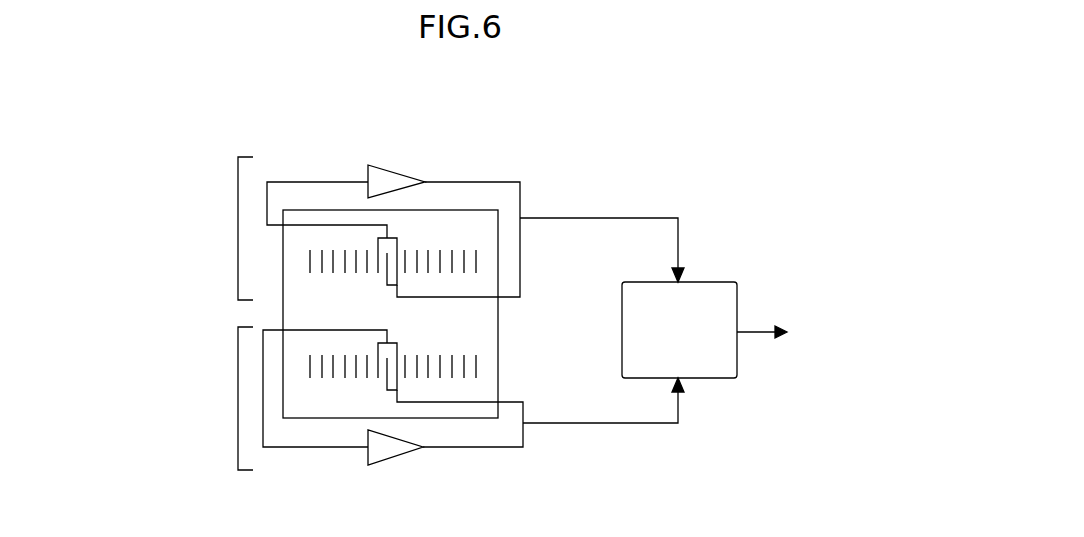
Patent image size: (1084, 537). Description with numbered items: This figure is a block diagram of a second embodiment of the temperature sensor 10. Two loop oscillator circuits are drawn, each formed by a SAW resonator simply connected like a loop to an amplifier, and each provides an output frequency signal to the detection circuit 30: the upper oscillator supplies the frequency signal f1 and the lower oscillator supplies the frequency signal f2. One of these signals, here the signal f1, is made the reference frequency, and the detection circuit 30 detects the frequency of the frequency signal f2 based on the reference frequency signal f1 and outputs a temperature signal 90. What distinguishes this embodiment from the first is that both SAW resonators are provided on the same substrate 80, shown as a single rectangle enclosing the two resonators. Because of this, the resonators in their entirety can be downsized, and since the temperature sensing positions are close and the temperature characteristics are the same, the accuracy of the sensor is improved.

The temperature sensor 10 is at (757, 110).
The detection circuit 30 is at (710, 282).
The substrate 80 is at (488, 212).
The temperature signal 90 is at (757, 334).
The frequency signal f1 is at (663, 218).
The frequency signal f2 is at (667, 423).